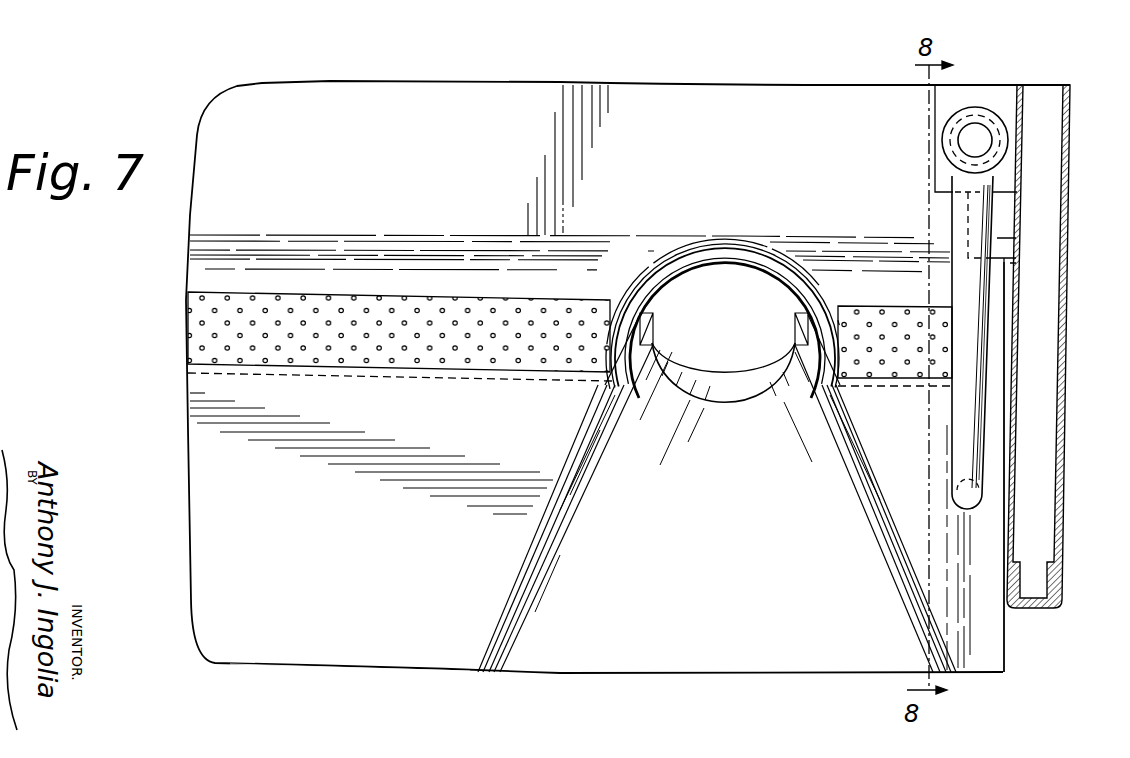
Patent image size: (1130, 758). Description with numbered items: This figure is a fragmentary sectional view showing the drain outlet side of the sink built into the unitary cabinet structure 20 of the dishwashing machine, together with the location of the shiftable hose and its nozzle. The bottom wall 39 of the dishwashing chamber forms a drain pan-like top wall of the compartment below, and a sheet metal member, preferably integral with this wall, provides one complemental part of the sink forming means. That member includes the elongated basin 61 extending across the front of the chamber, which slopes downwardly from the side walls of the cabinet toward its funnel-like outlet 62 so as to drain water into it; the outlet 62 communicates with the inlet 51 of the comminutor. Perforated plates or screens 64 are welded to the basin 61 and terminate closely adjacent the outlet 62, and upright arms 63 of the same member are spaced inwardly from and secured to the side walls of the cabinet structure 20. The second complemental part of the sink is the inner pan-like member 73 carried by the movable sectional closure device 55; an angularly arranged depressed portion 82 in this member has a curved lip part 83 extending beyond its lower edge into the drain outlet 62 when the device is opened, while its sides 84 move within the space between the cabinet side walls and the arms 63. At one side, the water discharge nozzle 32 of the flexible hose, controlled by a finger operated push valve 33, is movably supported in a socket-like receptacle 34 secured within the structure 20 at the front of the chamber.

The unitary cabinet structure 20 is at (1066, 380).
The water discharge nozzle 32 is at (965, 462).
The push valve 33 is at (958, 141).
The socket-like receptacle 34 is at (1000, 98).
The bottom wall 39 is at (764, 105).
The inlet of comminutor 51 is at (725, 330).
The movable sectional closure device 55 is at (195, 453).
The basin 61 is at (483, 280).
The funnel-like outlet 62 is at (718, 252).
The upright arms 63 is at (1000, 238).
The perforated plates or screens 64 is at (450, 376).
The inner pan-like member 73 is at (342, 645).
The depressed portion 82 is at (682, 648).
The curved lip part 83 is at (702, 400).
The sides 84 is at (985, 607).